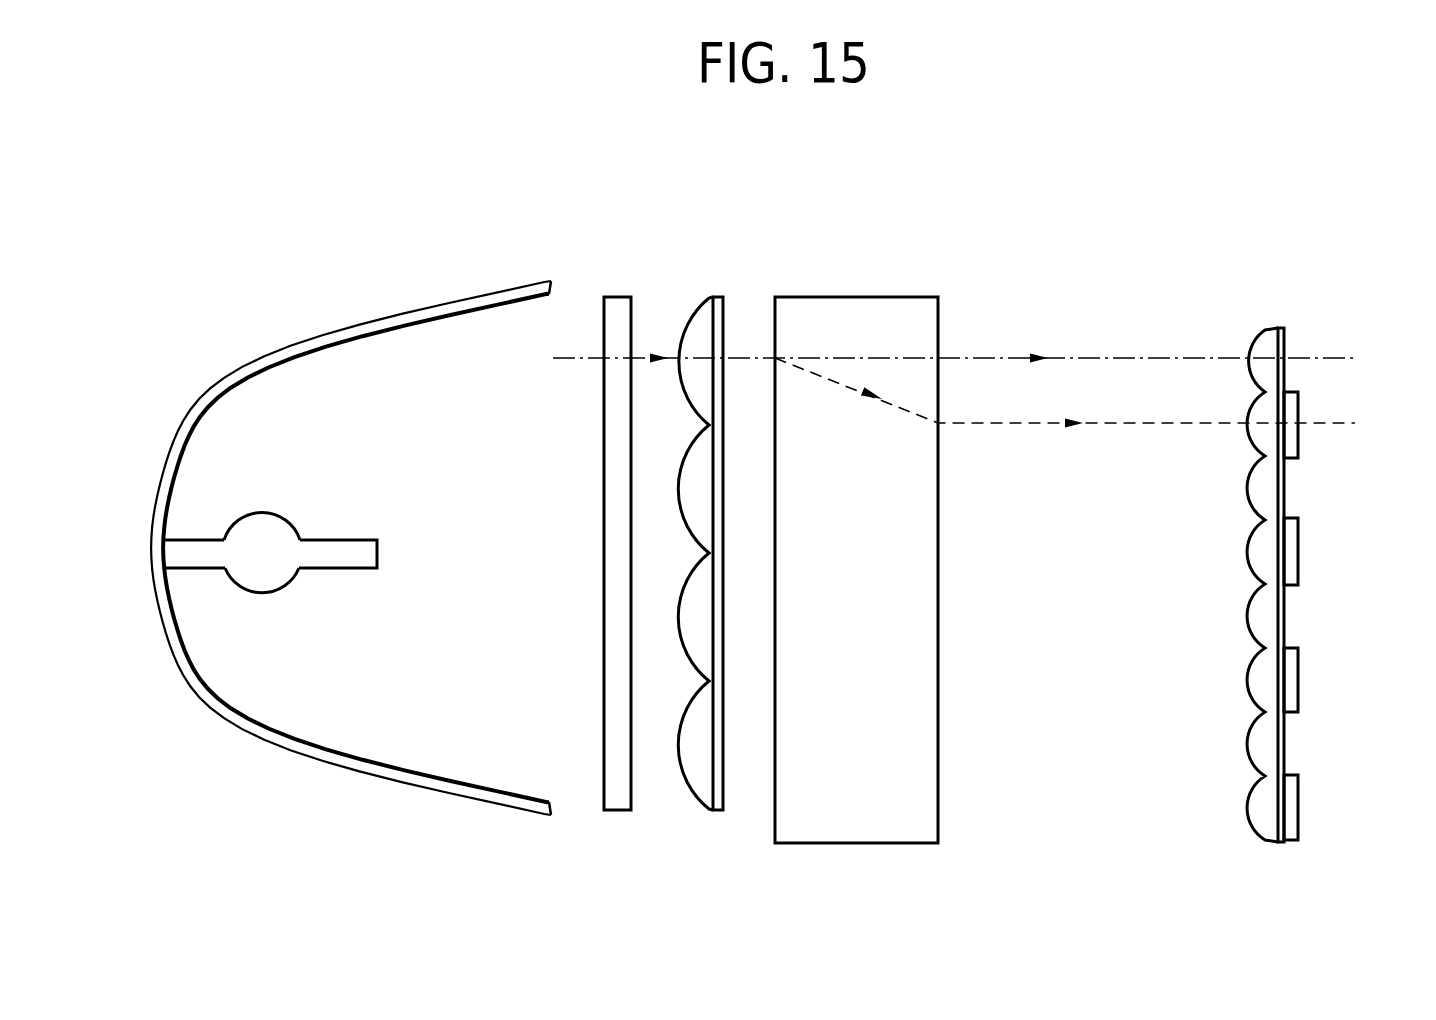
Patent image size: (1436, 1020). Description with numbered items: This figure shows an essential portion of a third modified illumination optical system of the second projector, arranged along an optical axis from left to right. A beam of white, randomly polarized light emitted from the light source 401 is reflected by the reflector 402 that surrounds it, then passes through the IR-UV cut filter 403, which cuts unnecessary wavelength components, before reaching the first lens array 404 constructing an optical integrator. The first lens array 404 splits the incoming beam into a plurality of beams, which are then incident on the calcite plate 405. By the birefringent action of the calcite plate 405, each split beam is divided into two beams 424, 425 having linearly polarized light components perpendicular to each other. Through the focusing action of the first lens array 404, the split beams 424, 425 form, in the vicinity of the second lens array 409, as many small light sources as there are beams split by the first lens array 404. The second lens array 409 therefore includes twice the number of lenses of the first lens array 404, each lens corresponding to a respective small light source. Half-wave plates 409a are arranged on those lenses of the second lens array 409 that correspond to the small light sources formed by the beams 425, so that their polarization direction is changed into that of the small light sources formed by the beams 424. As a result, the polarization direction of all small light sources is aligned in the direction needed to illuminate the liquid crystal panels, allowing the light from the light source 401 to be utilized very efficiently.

The light source 401 is at (262, 530).
The reflector 402 is at (257, 747).
The IR-UV cut filter 403 is at (616, 305).
The first lens array 404 is at (717, 305).
The calcite plate 405 is at (864, 305).
The beam 424 is at (1008, 355).
The beam 425 is at (1134, 420).
The second lens array 409 is at (1337, 512).
The half-wave plates 409a is at (1300, 443).